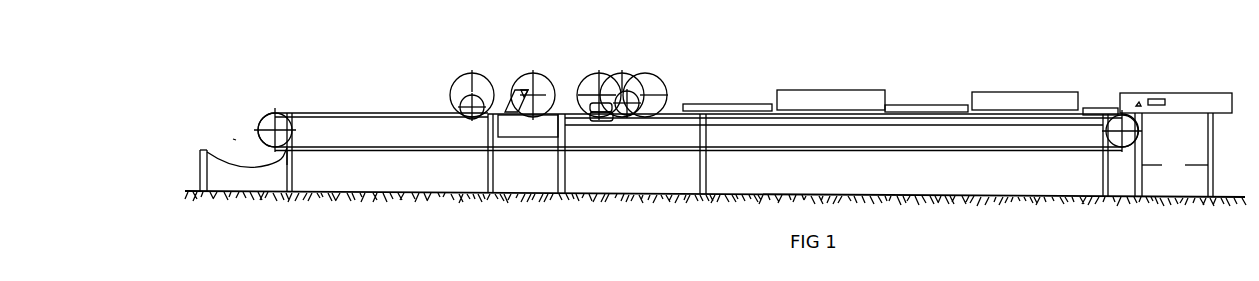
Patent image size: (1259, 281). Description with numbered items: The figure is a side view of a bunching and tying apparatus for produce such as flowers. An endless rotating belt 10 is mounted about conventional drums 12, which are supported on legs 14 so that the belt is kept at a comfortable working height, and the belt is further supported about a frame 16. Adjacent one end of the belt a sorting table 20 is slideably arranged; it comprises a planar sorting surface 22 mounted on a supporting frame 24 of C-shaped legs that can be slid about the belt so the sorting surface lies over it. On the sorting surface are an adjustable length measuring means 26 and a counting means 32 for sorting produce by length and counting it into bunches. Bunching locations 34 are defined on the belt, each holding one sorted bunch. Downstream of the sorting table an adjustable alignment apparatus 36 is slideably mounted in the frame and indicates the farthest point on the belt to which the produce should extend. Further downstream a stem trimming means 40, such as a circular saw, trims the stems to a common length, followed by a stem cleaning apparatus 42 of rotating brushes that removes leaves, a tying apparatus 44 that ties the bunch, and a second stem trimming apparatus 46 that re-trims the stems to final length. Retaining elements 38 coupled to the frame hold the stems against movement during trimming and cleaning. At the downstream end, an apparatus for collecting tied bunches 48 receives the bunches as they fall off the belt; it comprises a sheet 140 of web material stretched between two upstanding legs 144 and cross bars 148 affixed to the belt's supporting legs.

The endless rotating belt 10 is at (985, 151).
The drums 12 is at (265, 120).
The legs 14 is at (292, 182).
The frame 16 is at (347, 112).
The sorting table 20 is at (884, 90).
The sorting surface 22 is at (847, 89).
The supporting frame 24 is at (1175, 164).
The length measuring means 26 is at (1170, 96).
The counting means 32 is at (1136, 103).
The bunching locations 34 is at (458, 100).
The alignment apparatus 36 is at (729, 103).
The retaining elements 38 is at (524, 84).
The stem trimming means 40 is at (632, 115).
The stem cleaning apparatus 42 is at (600, 124).
The tying apparatus 44 is at (537, 128).
The second stem trimming apparatus 46 is at (462, 128).
The apparatus for collecting tied bunches 48 is at (236, 141).
The sheet 140 is at (228, 160).
The upstanding legs 144 is at (200, 167).
The cross bars 148 is at (293, 160).